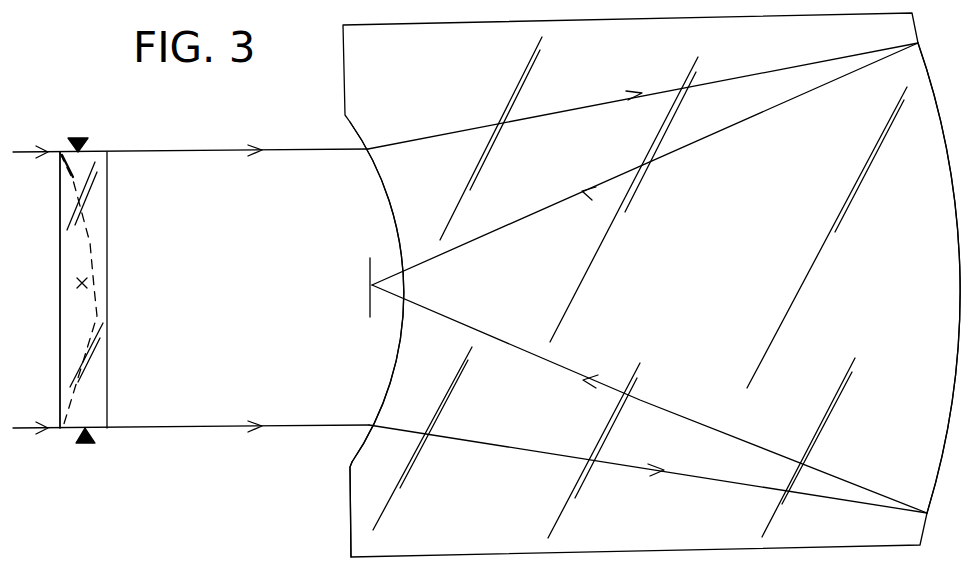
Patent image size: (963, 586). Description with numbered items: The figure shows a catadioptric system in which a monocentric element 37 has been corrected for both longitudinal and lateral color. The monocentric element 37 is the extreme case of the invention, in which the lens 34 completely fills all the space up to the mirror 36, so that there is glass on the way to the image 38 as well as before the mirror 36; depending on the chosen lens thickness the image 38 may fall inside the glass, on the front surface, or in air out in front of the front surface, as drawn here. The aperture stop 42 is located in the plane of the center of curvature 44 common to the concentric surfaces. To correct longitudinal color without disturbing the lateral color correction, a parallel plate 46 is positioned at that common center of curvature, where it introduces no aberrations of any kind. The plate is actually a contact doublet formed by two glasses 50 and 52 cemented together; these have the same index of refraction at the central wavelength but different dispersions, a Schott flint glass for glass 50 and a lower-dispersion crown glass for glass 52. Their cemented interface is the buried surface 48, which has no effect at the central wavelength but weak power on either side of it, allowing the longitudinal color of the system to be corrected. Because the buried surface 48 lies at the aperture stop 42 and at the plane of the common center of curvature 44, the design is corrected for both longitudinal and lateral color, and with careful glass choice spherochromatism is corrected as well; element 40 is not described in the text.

The lens 34 is at (698, 294).
The mirror 36 is at (957, 272).
The monocentric element 37 is at (318, 478).
The image 38 is at (370, 317).
The concave surface 40 is at (388, 381).
The aperture stop 42 is at (80, 142).
The center of curvature 44 is at (90, 279).
The parallel plate 46 is at (102, 430).
The buried surface 48 is at (100, 317).
The glass 50 is at (70, 315).
The glass 52 is at (93, 208).